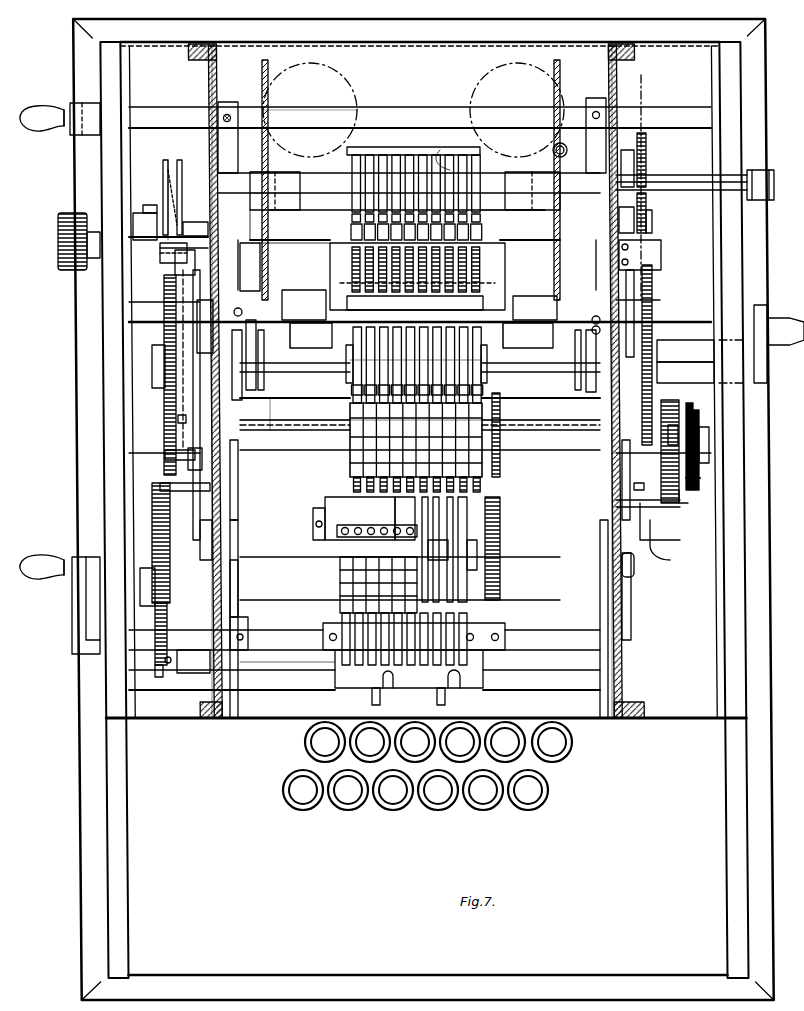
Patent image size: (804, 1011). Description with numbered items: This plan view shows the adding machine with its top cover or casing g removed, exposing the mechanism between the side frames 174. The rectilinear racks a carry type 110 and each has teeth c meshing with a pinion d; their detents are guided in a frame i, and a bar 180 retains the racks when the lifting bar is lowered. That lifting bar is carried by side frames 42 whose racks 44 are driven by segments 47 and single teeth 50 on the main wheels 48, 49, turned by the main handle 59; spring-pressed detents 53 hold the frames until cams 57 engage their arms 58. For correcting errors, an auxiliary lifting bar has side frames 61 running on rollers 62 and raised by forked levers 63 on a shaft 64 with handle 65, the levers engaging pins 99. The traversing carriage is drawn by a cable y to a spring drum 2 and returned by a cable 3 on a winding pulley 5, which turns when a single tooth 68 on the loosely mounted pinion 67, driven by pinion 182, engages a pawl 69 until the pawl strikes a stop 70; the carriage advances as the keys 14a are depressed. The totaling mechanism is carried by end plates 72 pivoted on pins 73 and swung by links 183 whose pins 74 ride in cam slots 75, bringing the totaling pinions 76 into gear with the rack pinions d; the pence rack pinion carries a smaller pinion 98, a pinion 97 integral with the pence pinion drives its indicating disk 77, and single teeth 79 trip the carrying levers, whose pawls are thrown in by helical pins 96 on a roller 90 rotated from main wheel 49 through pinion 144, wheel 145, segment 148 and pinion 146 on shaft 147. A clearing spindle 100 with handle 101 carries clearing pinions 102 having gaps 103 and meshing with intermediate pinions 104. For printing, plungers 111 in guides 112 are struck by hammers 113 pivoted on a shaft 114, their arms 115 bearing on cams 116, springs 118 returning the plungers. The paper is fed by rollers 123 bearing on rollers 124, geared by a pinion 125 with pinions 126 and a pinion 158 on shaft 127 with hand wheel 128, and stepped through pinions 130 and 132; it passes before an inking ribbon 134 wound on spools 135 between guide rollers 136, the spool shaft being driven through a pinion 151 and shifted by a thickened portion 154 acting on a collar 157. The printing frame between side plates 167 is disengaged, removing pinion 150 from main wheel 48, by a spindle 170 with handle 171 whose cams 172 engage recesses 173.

The spring drum 2 is at (163, 170).
The cable 3 is at (692, 480).
The winding pulley 5 is at (690, 425).
The keys 14a is at (432, 800).
The side frames 42 is at (590, 380).
The racks 44 is at (190, 330).
The segments 47 is at (660, 252).
The main wheel 48 is at (660, 345).
The main wheel 49 is at (172, 415).
The single teeth 50 is at (175, 390).
The detents 53 is at (190, 318).
The cams 57 is at (195, 490).
The arms 58 is at (180, 310).
The main handle 59 is at (790, 302).
The side frames 61 is at (585, 362).
The rollers 62 is at (270, 355).
The forked levers 63 is at (235, 148).
The shaft 64 is at (414, 124).
The handle 65 is at (55, 115).
The pinion 67 is at (672, 425).
The single tooth 68 is at (700, 458).
The pawl 69 is at (684, 500).
The stop 70 is at (708, 440).
The end plates 72 is at (232, 512).
The pins 73 is at (240, 580).
The pins 74 is at (225, 455).
The cam slots 75 is at (428, 405).
The totaling pinions 76 is at (455, 502).
The indicating disks 77 is at (395, 515).
The single teeth 79 is at (458, 528).
The roller 90 is at (478, 683).
The pins 96 is at (435, 700).
The pinion 97 is at (500, 521).
The pinion 98 is at (502, 460).
The pins 99 is at (240, 310).
The clearing spindle 100 is at (306, 636).
The handle 101 is at (76, 592).
The clearing pinions 102 is at (382, 662).
The gap 103 is at (287, 662).
The intermediate pinions 104 is at (352, 592).
The type 110 is at (450, 325).
The plungers 111 is at (365, 306).
The guides 112 is at (490, 294).
The hammers 113 is at (362, 222).
The shaft 114 is at (512, 202).
The arms 115 is at (438, 164).
The cams 116 is at (450, 155).
The springs 118 is at (470, 248).
The rollers 123 is at (419, 305).
The rollers 124 is at (413, 335).
The pinion 125 is at (162, 440).
The pinions 126 is at (289, 290).
The shaft 127 is at (174, 222).
The hand wheel 128 is at (66, 214).
The pinion 130 is at (187, 200).
The pinion 132 is at (170, 252).
The inking ribbon 134 is at (222, 258).
The spools 135 is at (338, 92).
The guide rollers 136 is at (256, 365).
The pinion 144 is at (165, 450).
The wheel 145 is at (160, 496).
The pinion 146 is at (156, 678).
The shaft 147 is at (550, 680).
The segment 148 is at (160, 535).
The pinion 150 is at (652, 216).
The pinion 151 is at (646, 165).
The thickened portion 154 is at (560, 148).
The collar 157 is at (641, 98).
The pinion 158 is at (278, 226).
The side plates 167 is at (262, 76).
The spindle 170 is at (678, 183).
The handle 171 is at (752, 185).
The cams 172 is at (401, 170).
The recesses 173 is at (398, 186).
The side frames 174 is at (208, 76).
The bar 180 is at (340, 428).
The pinion 182 is at (668, 531).
The links 183 is at (208, 525).
The racks a is at (385, 363).
The set of teeth c is at (385, 392).
The pinion d is at (372, 484).
The top cover or casing g is at (652, 722).
The frame i is at (282, 400).
The cable y is at (172, 185).